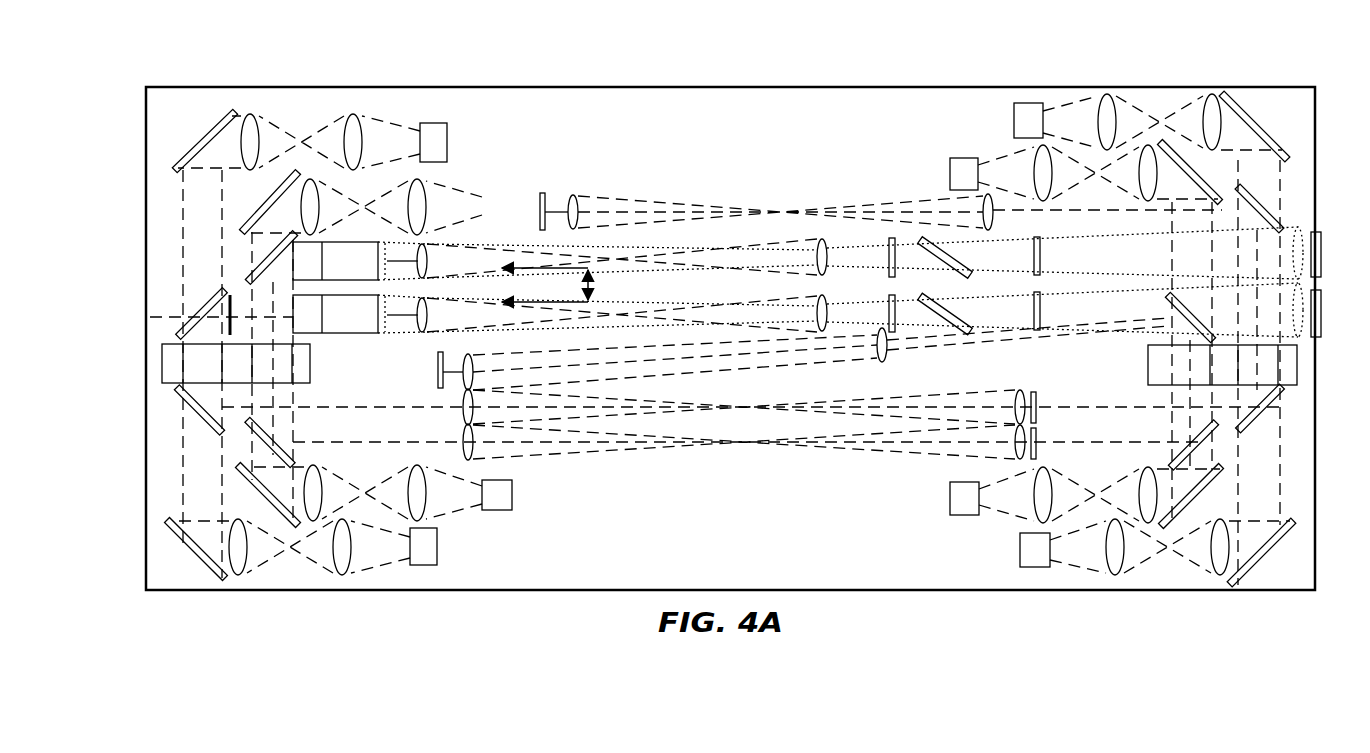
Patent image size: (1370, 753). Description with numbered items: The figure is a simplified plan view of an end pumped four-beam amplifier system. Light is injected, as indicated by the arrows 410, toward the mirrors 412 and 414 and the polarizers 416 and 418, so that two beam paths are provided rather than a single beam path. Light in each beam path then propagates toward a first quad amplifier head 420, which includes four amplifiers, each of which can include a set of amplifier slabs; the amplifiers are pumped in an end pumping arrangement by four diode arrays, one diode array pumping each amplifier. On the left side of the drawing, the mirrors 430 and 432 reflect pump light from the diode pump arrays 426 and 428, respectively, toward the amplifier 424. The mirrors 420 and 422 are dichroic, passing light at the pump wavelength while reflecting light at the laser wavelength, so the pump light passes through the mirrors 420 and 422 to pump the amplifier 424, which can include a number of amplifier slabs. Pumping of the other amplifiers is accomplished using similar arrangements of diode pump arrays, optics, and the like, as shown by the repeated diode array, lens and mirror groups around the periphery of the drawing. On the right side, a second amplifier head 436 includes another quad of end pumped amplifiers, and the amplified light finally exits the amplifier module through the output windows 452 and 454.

The arrows 410 is at (602, 288).
The mirror 412 is at (363, 243).
The mirror 414 is at (362, 335).
The polarizer 416 is at (303, 262).
The polarizer 418 is at (312, 330).
The first quad amplifier head 420 is at (203, 316).
The dichroic mirror 422 is at (210, 407).
The amplifier 424 is at (182, 362).
The diode pump array 426 is at (448, 143).
The diode pump array 428 is at (438, 548).
The mirror 430 is at (207, 134).
The mirror 432 is at (183, 548).
The second amplifier head 436 is at (1173, 607).
The output window 452 is at (1322, 250).
The output window 454 is at (1322, 316).